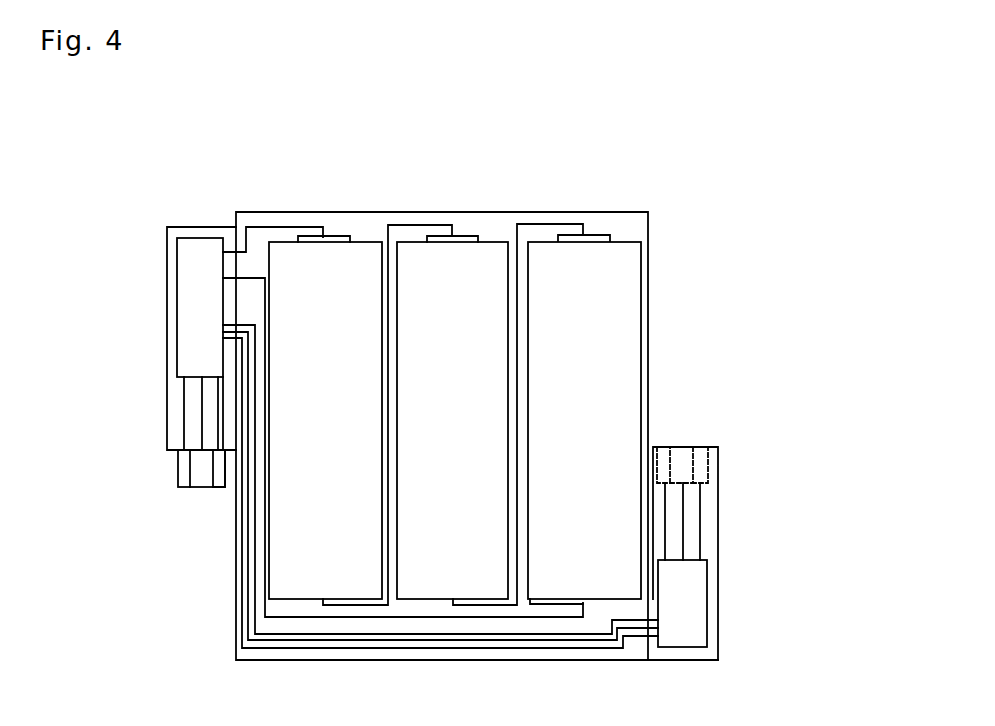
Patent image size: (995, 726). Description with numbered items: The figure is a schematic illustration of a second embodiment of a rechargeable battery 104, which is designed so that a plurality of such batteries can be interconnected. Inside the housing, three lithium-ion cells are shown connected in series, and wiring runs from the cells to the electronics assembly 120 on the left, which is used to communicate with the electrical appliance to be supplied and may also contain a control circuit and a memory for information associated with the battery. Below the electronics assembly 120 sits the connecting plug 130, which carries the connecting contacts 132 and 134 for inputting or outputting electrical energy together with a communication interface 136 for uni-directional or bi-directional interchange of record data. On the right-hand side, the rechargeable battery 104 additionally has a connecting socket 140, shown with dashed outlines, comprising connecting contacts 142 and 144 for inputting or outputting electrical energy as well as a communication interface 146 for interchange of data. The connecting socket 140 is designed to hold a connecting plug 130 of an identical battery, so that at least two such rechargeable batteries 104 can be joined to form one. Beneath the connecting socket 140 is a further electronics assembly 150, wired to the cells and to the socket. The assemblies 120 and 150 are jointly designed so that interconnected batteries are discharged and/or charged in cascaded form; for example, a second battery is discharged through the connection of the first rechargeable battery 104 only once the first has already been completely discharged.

The rechargeable battery 104 is at (503, 149).
The electronics assembly 120 is at (202, 289).
The connecting plug 130 is at (190, 514).
The connecting contact 132 is at (183, 463).
The connecting contact 134 is at (214, 486).
The communication interface 136 is at (198, 482).
The connecting socket 140 is at (683, 421).
The connecting contact 142 is at (665, 447).
The connecting contact 144 is at (697, 475).
The communication interface 146 is at (683, 447).
The further electronics assembly 150 is at (682, 598).